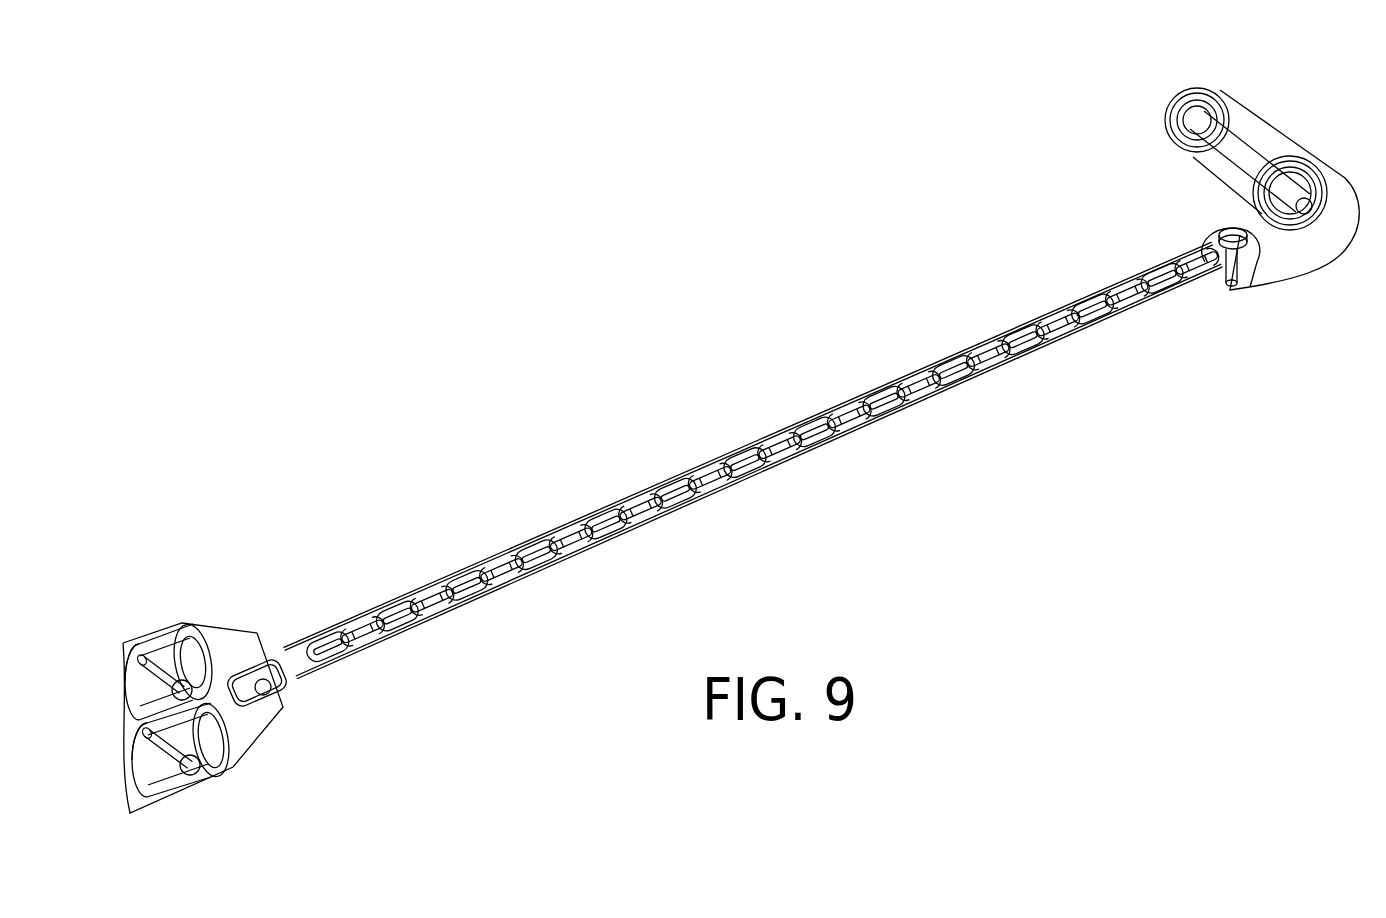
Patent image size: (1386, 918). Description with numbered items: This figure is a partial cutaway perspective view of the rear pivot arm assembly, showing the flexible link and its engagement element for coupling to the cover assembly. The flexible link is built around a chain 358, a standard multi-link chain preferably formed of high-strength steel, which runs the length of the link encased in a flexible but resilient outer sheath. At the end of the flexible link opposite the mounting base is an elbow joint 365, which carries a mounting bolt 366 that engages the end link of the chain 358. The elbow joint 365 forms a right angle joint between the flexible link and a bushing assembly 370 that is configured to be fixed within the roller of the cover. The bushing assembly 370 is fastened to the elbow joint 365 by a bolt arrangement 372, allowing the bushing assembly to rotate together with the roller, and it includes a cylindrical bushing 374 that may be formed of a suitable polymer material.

The chain 358 is at (1043, 360).
The elbow joint 365 is at (1302, 248).
The mounting bolt 366 is at (1232, 233).
The bushing assembly 370 is at (1245, 123).
The bolt arrangement 372 is at (1247, 155).
The cylindrical bushing 374 is at (1205, 163).